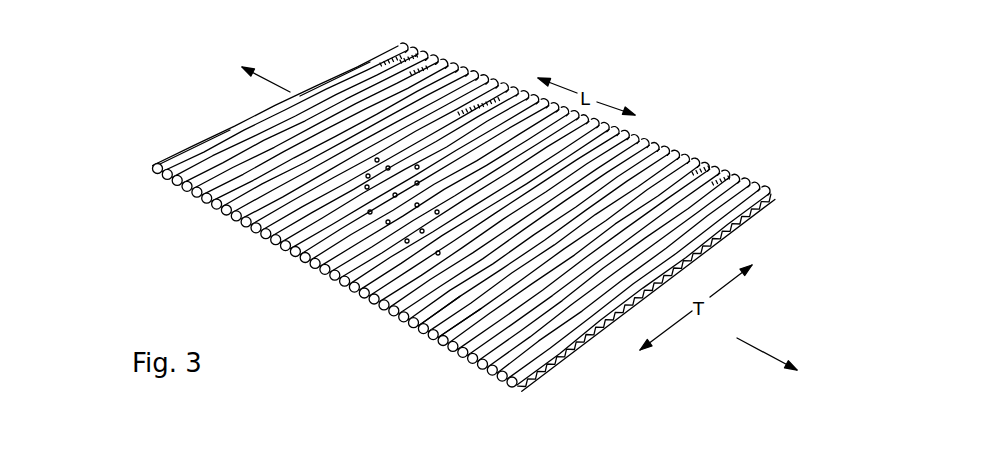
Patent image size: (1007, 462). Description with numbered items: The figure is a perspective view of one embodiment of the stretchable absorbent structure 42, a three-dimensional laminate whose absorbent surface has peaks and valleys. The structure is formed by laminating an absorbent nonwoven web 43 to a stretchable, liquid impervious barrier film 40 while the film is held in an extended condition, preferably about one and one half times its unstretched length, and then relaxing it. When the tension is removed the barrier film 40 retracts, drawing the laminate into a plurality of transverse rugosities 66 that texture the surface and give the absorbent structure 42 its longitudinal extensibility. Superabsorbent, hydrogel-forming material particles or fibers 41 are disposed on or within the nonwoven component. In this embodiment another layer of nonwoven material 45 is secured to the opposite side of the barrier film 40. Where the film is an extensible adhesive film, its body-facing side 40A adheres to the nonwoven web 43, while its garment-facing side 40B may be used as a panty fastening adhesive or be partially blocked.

The barrier film 40 is at (317, 267).
The body-facing side of the barrier film 40A is at (412, 328).
The garment-facing side of the barrier film 40B is at (433, 337).
The superabsorbent hydrogel-forming material particles or fibers 41 is at (370, 212).
The stretchable absorbent structure 42 is at (650, 128).
The nonwoven web 43 is at (218, 137).
The nonwoven material layer 45 is at (177, 185).
The rugosities 66 is at (730, 178).